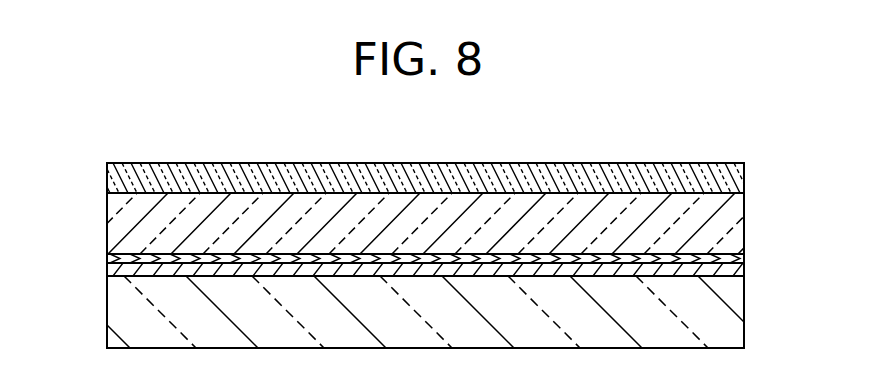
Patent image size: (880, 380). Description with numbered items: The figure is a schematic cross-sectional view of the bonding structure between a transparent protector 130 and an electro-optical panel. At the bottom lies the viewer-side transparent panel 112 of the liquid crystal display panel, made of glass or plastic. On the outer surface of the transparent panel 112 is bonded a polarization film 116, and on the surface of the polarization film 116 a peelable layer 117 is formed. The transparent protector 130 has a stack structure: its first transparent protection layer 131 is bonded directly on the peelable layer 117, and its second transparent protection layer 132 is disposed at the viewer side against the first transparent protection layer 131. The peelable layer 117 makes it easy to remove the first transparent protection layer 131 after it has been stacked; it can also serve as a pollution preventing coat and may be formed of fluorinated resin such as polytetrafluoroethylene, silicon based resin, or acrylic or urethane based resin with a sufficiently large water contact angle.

The transparent panel 112 is at (117, 311).
The polarization film 116 is at (117, 267).
The peelable layer 117 is at (746, 259).
The transparent protector 130 is at (750, 162).
The first transparent protection layer 131 is at (117, 225).
The second transparent protection layer 132 is at (284, 163).